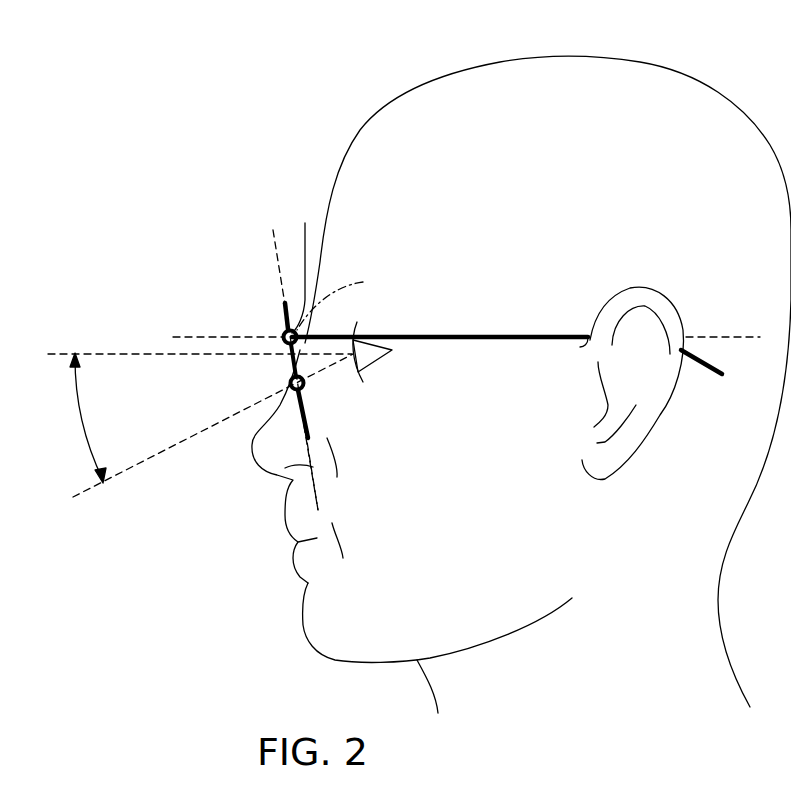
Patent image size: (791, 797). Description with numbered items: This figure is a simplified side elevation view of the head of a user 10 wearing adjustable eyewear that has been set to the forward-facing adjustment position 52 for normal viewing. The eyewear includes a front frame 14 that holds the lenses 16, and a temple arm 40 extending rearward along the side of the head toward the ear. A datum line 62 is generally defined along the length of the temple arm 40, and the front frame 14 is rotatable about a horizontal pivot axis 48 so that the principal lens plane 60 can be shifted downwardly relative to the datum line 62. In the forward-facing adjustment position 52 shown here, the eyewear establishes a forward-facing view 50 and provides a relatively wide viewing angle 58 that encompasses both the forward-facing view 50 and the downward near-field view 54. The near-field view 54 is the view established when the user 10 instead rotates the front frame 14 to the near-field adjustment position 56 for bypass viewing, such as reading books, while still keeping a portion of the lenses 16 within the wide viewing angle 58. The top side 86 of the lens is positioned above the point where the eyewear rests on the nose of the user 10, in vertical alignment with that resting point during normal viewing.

The user 10 is at (708, 88).
The front frame 14 is at (306, 266).
The lenses 16 is at (285, 320).
The temple arm 40 is at (474, 337).
The horizontal pivot axis 48 is at (345, 326).
The forward-facing view 50 is at (113, 353).
The forward-facing adjustment position 52 is at (286, 334).
The near-field view 54 is at (125, 471).
The near-field adjustment position 56 is at (291, 392).
The viewing angle 58 is at (80, 428).
The principal lens plane 60 is at (315, 455).
The datum line 62 is at (193, 334).
The top side 86 is at (283, 310).